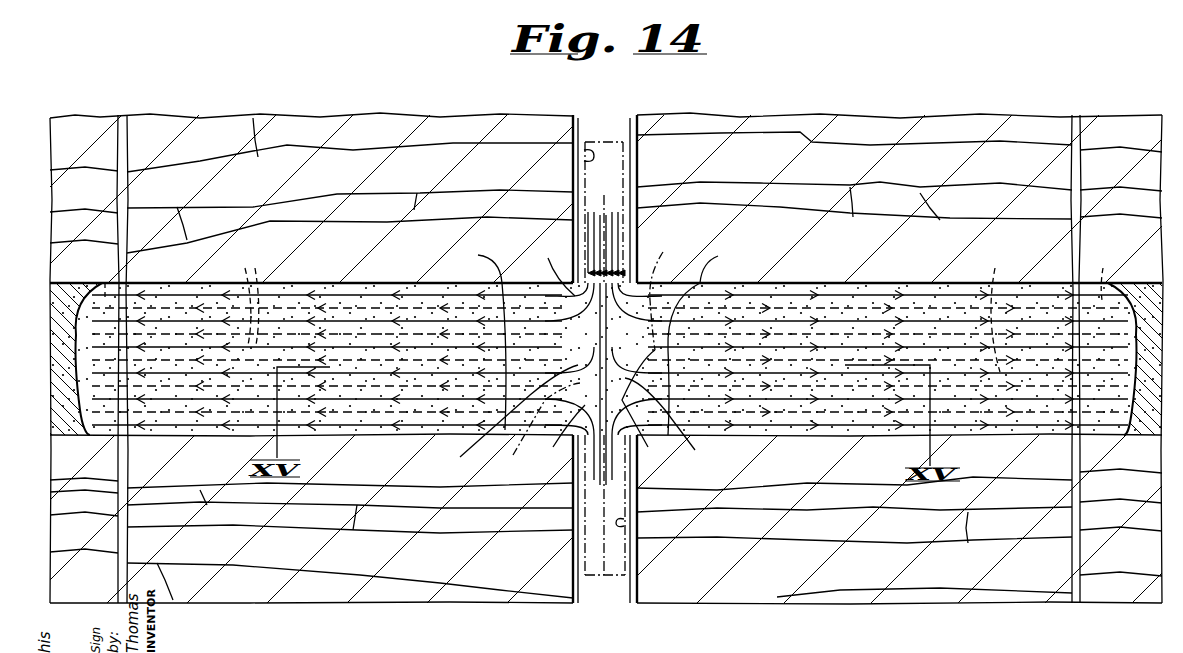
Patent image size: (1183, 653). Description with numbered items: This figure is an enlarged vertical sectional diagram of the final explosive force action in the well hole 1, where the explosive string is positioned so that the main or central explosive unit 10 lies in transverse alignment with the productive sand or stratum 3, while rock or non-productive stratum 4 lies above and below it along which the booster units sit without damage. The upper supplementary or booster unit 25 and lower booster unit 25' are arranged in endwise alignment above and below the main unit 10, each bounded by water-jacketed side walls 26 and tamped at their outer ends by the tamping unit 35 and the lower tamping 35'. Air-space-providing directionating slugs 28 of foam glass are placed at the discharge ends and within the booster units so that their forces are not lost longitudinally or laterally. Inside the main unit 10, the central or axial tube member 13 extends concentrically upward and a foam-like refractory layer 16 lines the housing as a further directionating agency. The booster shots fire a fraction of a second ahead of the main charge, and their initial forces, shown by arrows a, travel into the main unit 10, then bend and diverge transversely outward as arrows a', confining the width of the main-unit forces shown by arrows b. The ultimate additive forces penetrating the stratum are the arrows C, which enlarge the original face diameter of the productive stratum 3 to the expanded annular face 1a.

The well hole 1 is at (576, 118).
The annular face 1a is at (597, 334).
The productive sand or stratum 3 is at (300, 325).
The rock or non-productive stratum 4 is at (941, 132).
The main or central explosive unit 10 is at (664, 290).
The central or axial tube member 13 is at (672, 425).
The foam-like refractory body or layer 16 is at (537, 430).
The upper supplementary or booster unit 25 is at (634, 155).
The lower supplementary or booster unit 25' is at (641, 563).
The water-jacketed side walls 26 is at (582, 157).
The directionating slug 28 is at (604, 372).
The tamping unit 35 is at (632, 183).
The lower tamping unit 35' is at (632, 539).
The arrows a is at (603, 357).
The arrows a' is at (557, 350).
The arrows b is at (549, 413).
The arrows c C is at (604, 306).